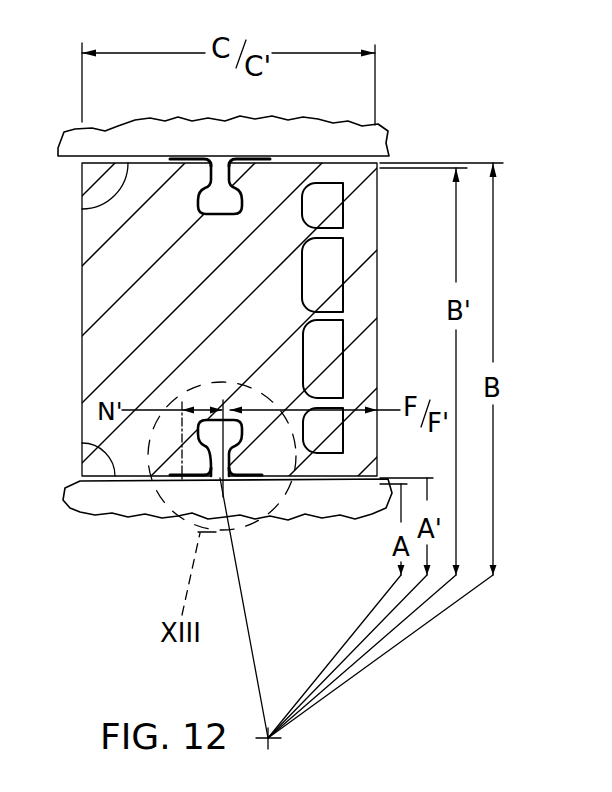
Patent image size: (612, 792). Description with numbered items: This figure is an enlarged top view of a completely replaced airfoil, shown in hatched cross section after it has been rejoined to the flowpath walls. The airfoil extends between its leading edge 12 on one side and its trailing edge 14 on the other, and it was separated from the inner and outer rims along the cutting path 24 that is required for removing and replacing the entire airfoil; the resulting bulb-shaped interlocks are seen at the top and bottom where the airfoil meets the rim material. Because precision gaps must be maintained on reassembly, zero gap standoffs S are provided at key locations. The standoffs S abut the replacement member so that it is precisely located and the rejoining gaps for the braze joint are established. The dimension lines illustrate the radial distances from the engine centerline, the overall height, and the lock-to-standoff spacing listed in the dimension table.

The leading edge 12 is at (82, 304).
The trailing edge 14 is at (377, 263).
The cutting path 24 is at (82, 209).
The zero gap standoffs S is at (181, 157).